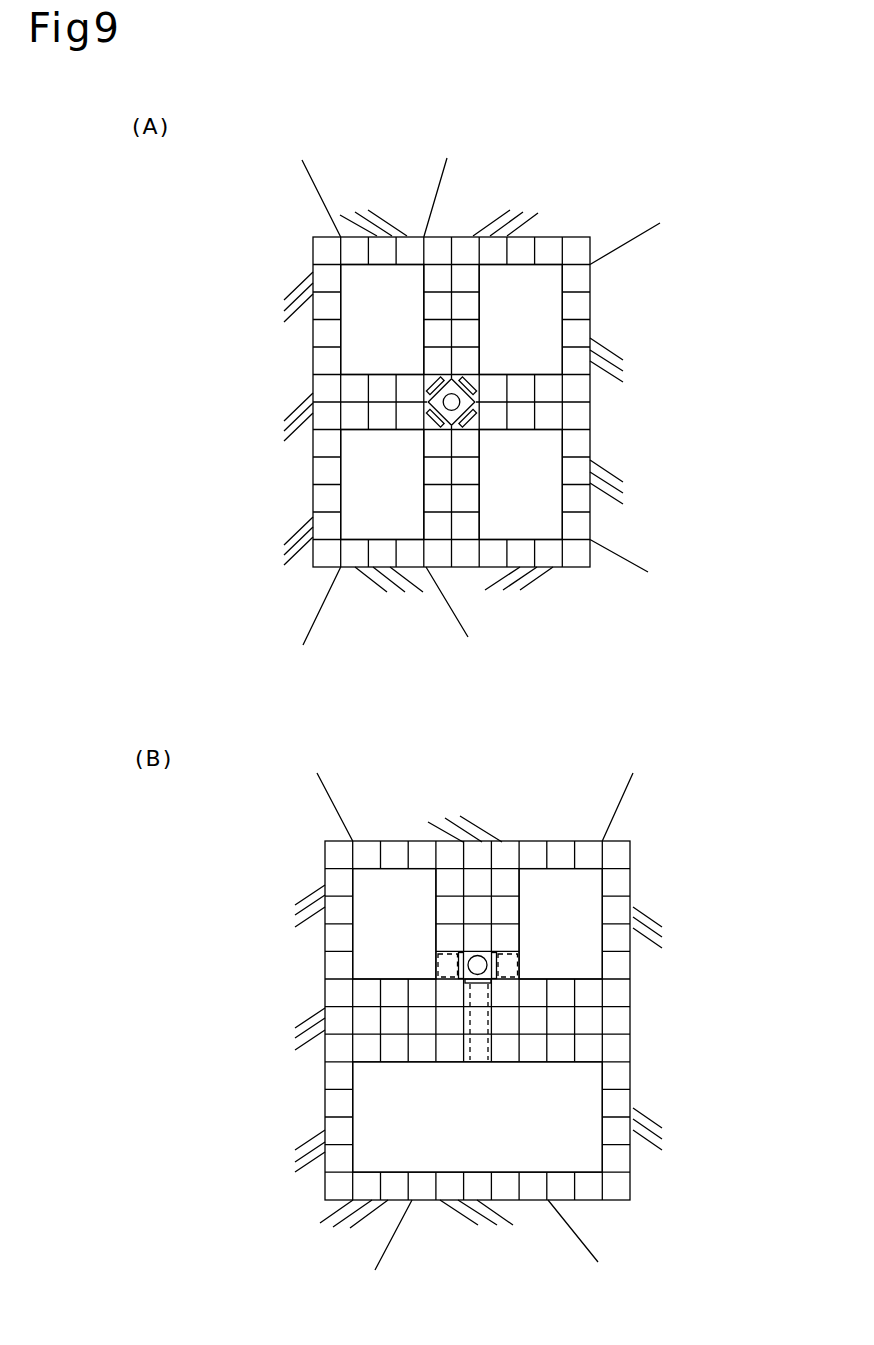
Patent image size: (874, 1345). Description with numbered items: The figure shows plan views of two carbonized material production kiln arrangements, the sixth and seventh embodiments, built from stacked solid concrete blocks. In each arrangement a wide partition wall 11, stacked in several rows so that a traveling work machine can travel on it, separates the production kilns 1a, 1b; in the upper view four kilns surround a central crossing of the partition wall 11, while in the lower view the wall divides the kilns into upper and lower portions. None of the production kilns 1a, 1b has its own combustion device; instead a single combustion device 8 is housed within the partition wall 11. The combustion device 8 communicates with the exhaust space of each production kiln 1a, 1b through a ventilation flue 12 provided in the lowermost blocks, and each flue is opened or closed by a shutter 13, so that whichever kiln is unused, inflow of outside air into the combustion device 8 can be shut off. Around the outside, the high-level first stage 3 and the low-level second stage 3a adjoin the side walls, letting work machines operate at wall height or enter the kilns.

The production kiln 1a is at (541, 291).
The production kiln 1b is at (573, 1075).
The first stage 3 is at (550, 192).
The second stage 3a is at (398, 189).
The combustion device 8 is at (467, 413).
The partition wall 11 is at (547, 415).
The ventilation flue 12 is at (430, 381).
The shutter 13 is at (437, 422).